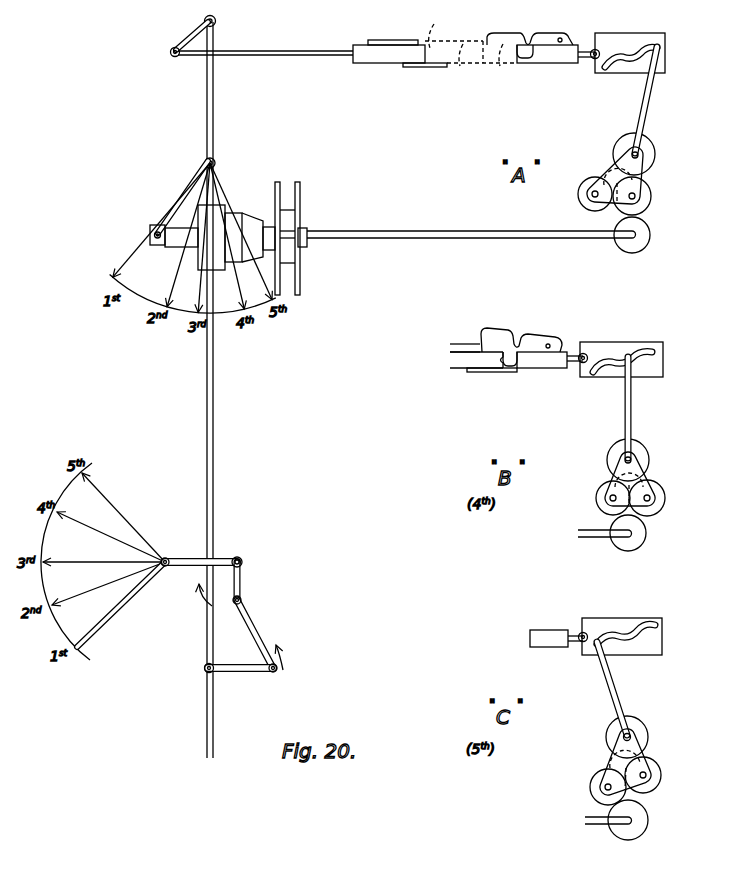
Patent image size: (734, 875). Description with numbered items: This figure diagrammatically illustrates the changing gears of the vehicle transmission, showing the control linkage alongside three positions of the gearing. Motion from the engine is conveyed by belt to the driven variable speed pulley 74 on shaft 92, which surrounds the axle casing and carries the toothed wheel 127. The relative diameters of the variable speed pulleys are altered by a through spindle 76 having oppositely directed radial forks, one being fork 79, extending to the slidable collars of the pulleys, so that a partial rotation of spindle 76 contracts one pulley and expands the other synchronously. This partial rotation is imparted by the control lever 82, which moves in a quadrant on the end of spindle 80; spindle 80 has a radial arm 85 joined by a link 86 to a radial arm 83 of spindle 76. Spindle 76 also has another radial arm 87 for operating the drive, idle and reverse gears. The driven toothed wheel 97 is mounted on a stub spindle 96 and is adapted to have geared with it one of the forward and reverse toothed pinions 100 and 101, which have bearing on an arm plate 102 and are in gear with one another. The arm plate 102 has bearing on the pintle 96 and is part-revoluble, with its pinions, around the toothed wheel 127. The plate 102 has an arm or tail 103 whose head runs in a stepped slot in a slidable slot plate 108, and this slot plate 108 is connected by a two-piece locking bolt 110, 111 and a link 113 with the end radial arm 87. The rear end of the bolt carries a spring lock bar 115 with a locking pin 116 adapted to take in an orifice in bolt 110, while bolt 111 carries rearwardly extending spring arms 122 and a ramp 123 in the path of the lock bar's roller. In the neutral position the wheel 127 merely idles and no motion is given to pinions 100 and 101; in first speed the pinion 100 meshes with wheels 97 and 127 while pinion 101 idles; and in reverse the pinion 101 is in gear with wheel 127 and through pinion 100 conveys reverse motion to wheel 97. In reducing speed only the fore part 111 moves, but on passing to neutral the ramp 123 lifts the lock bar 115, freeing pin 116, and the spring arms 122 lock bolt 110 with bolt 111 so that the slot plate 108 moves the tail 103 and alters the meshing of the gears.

The driven variable speed pulley 74 is at (300, 186).
The through spindle 76 is at (213, 113).
The radial fork 79 is at (185, 196).
The spindle 80 is at (199, 551).
The control lever 82 is at (111, 614).
The radial arm 83 is at (240, 675).
The radial arm 85 is at (241, 580).
The link 86 is at (258, 623).
The radial arm 87 is at (194, 41).
The shaft 92 is at (505, 226).
The stub spindle 96 is at (640, 152).
The driven toothed wheel 97 is at (656, 156).
The forward toothed pinion 100 is at (652, 202).
The reverse toothed pinion 101 is at (579, 205).
The arm plate 102 is at (613, 178).
The arm or tail 103 is at (641, 97).
The slidable slot plate 108 is at (622, 344).
The bolt (rear part of two-piece locking bolt) 110 is at (556, 346).
The bolt (fore part of two-piece locking bolt) 111 is at (436, 186).
The link 113 is at (296, 53).
The spring lock bar 115 is at (553, 33).
The locking pin 116 is at (527, 43).
The spring arms 122 is at (428, 66).
The ramp 123 is at (396, 43).
The toothed wheel 127 is at (651, 236).